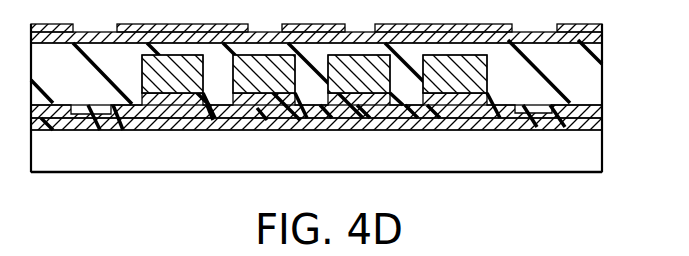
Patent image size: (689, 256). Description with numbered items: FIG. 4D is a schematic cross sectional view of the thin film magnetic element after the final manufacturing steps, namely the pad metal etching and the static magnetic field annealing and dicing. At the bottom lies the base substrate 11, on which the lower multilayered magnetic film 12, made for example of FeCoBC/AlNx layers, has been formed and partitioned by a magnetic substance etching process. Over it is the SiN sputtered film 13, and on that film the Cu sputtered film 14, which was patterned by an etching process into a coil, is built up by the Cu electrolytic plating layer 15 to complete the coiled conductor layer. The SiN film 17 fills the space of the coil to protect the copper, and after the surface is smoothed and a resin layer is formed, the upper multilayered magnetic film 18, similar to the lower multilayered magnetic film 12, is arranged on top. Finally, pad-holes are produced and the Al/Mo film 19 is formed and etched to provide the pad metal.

The base substrate 11 is at (602, 164).
The multilayered magnetic film 12 is at (602, 125).
The SiN sputtered film 13 is at (602, 106).
The Cu sputtered film 14 is at (489, 90).
The Cu electrolytic plating layer 15 is at (478, 69).
The SiN film 17 is at (592, 75).
The upper multilayered magnetic film 18 is at (602, 37).
The Al/Mo film 19 is at (602, 25).